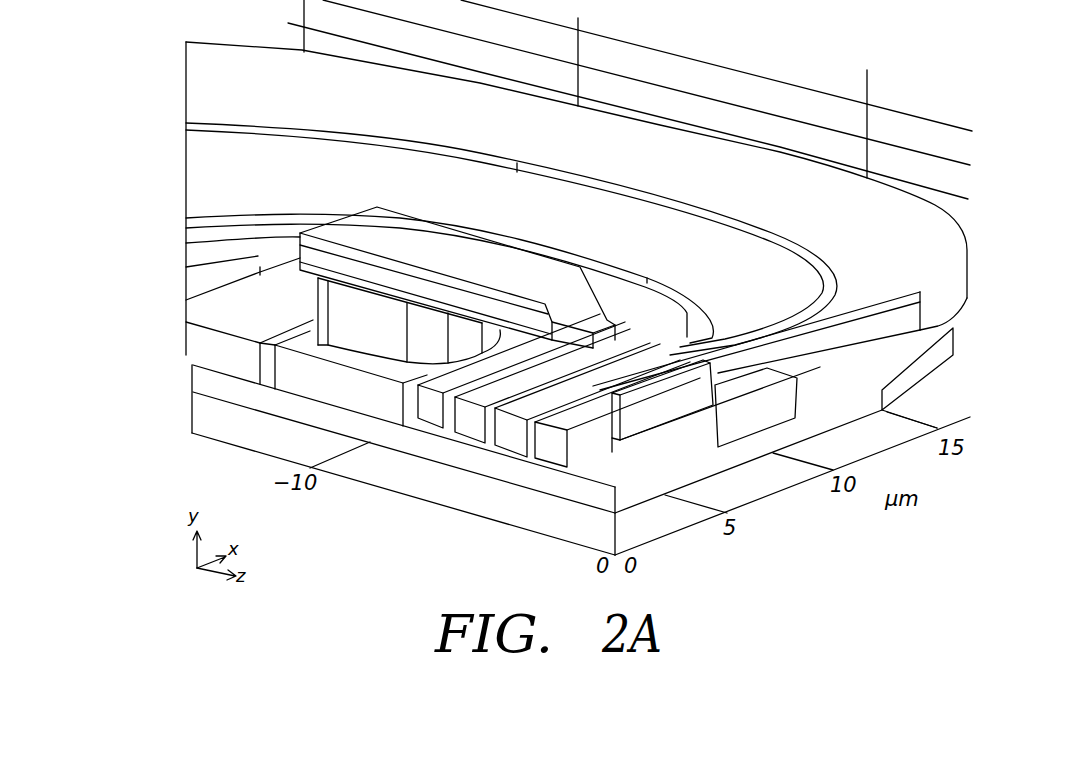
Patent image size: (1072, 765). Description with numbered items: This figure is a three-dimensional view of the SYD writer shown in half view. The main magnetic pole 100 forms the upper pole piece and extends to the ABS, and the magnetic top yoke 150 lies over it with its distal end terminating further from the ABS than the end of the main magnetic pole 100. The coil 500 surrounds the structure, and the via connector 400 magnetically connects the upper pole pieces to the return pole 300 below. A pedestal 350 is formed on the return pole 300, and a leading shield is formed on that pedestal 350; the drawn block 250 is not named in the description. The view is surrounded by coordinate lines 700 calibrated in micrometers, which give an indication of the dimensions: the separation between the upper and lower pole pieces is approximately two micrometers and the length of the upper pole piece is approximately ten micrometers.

The main magnetic pole 100 is at (187, 277).
The magnetic top yoke 150 is at (187, 253).
The electrode block 250 is at (692, 398).
The return pole 300 is at (430, 447).
The pedestal 350 is at (665, 450).
The via connector 400 is at (357, 327).
The coil 500 is at (944, 253).
The coordinate lines 700 is at (922, 118).